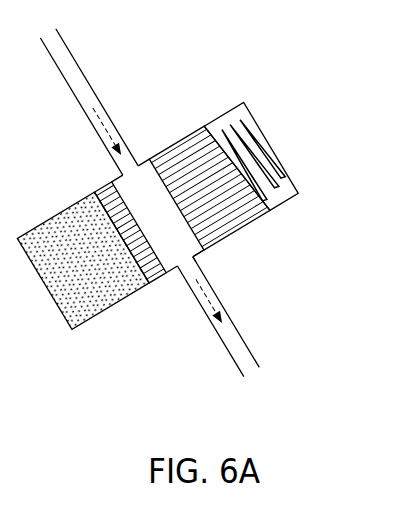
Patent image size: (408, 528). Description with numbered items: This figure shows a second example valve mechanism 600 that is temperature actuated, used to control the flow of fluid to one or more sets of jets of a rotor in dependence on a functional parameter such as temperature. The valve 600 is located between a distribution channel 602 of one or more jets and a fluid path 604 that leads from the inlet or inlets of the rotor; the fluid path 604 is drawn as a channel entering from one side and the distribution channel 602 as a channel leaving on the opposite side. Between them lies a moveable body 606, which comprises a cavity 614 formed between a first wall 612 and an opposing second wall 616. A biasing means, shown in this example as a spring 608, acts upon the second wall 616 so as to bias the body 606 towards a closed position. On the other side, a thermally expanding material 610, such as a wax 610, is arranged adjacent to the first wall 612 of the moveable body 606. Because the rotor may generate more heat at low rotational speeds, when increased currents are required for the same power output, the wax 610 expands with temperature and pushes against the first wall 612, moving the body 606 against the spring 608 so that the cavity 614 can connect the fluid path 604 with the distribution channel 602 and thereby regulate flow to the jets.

The valve mechanism 600 is at (195, 220).
The distribution channel 602 is at (218, 317).
The fluid path 604 is at (89, 102).
The moveable body 606 is at (200, 256).
The spring 608 is at (251, 160).
The thermally expanding material 610 is at (83, 260).
The first wall 612 is at (130, 232).
The cavity 614 is at (158, 216).
The second wall 616 is at (209, 185).